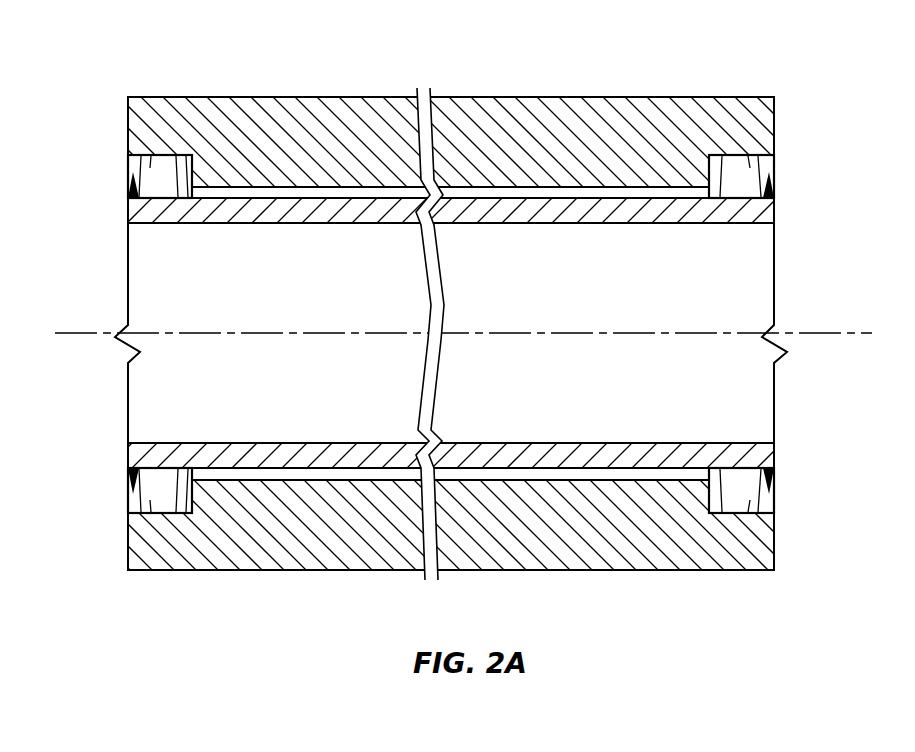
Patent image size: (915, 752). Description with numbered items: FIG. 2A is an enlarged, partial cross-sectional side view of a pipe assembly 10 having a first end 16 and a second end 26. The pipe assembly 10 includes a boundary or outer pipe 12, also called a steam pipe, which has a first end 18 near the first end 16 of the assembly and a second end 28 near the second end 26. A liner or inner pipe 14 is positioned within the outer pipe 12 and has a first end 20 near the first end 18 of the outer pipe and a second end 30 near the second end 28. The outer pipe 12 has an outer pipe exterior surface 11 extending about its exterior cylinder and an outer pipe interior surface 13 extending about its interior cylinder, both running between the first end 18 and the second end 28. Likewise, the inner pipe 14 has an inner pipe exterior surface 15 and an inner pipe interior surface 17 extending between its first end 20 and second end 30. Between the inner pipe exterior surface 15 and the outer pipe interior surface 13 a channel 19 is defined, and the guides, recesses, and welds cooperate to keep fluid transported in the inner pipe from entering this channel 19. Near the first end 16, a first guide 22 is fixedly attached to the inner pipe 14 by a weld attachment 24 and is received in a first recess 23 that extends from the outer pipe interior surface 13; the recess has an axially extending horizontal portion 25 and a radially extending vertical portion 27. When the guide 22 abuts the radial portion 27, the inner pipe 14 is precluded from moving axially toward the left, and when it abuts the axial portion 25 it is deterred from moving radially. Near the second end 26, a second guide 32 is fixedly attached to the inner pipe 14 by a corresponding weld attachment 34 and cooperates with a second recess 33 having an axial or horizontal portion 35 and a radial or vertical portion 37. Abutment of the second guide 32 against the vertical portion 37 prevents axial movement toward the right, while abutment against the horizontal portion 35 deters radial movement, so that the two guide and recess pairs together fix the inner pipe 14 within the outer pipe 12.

The pipe assembly 10 is at (862, 432).
The outer pipe exterior surface 11 is at (597, 97).
The boundary pipe 12 is at (475, 151).
The outer pipe interior surface 13 is at (578, 183).
The liner pipe 14 is at (475, 221).
The inner pipe exterior surface 15 is at (541, 195).
The first end of the pipe assembly 16 is at (823, 547).
The inner pipe interior surface 17 is at (346, 222).
The first end of the outer pipe 18 is at (778, 106).
The channel 19 is at (371, 186).
The first end of the inner pipe 20 is at (778, 213).
The first guide 22 is at (729, 188).
The first recess 23 is at (744, 138).
The weld attachment 24 is at (771, 185).
The axially extending horizontal portion 25 is at (708, 159).
The second end of the pipe assembly 26 is at (83, 526).
The radially extending vertical portion 27 is at (708, 184).
The second end of the outer pipe 28 is at (124, 101).
The second end of the inner pipe 30 is at (124, 210).
The second guide 32 is at (150, 188).
The second recess 33 is at (162, 130).
The first gap 34 is at (130, 186).
The axial or horizontal portion 35 is at (186, 153).
The radial or vertical portion 37 is at (193, 182).